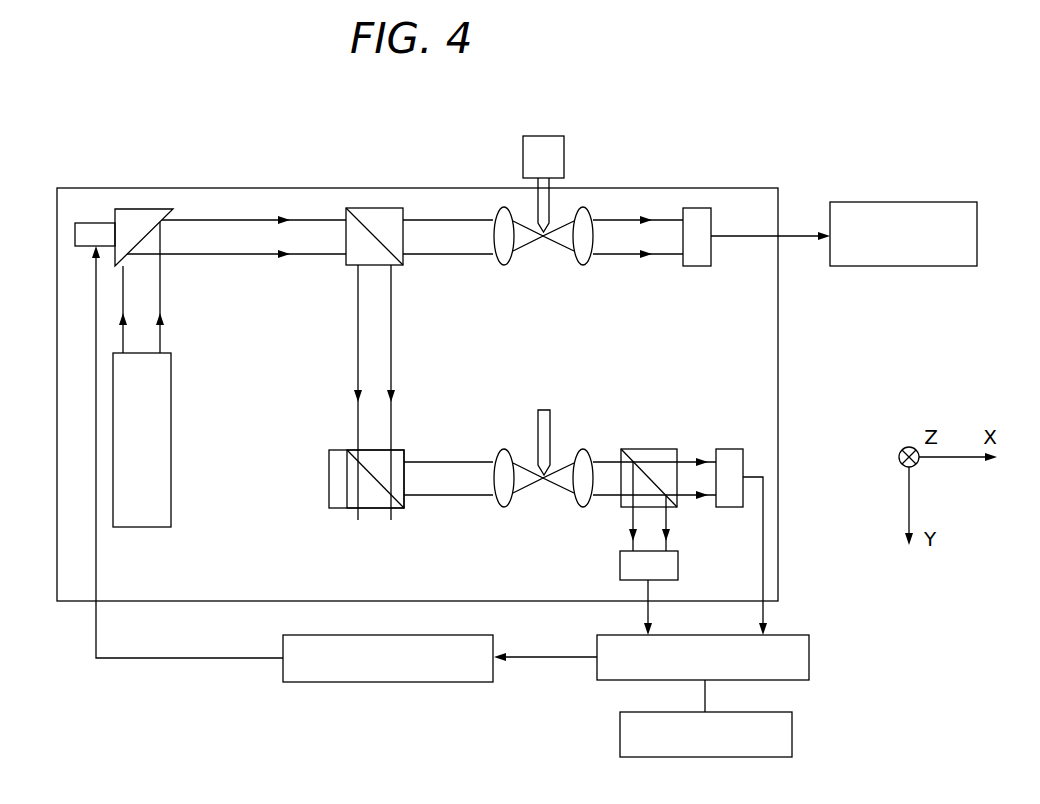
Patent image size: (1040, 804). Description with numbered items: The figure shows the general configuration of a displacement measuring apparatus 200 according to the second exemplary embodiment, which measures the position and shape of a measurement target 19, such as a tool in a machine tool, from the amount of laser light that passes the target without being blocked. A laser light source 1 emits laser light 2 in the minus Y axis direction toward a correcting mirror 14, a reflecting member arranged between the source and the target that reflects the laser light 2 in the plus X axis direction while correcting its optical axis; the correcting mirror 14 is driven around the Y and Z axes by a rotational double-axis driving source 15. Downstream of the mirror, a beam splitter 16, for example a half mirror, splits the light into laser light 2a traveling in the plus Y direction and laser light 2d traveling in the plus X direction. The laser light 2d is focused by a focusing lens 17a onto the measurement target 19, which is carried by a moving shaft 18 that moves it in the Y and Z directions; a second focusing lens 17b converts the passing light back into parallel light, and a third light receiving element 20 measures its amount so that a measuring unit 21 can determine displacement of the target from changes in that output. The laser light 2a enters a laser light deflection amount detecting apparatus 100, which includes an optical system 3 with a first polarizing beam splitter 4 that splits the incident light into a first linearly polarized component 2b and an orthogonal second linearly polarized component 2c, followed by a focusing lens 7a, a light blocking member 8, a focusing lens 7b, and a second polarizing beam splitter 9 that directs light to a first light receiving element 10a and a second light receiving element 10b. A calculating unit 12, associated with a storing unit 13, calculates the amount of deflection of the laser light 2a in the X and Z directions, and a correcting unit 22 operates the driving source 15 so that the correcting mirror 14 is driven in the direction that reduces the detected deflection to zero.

The laser light source 1 is at (171, 420).
The laser light 2 is at (160, 282).
The laser light 2a is at (358, 333).
The first linearly polarized component 2b is at (430, 497).
The second linearly polarized component 2c is at (475, 497).
The laser light 2d is at (437, 220).
The optical system 3 is at (314, 473).
The first polarizing beam splitter 4 is at (404, 450).
The focusing lens 7a is at (498, 451).
The focusing lens 7b is at (588, 450).
The light blocking member 8 is at (541, 410).
The second polarizing beam splitter 9 is at (647, 449).
The first light receiving element 10a is at (620, 565).
The second light receiving element 10b is at (730, 449).
The calculating unit 12 is at (809, 659).
The storing unit 13 is at (792, 733).
The correcting mirror 14 is at (141, 209).
The driving source 15 is at (92, 223).
The beam splitter 16 is at (370, 208).
The focusing lens 17a is at (498, 207).
The focusing lens 17b is at (592, 207).
The moving shaft 18 is at (560, 136).
The measurement target 19 is at (550, 205).
The third light receiving element 20 is at (694, 208).
The measuring unit 21 is at (898, 202).
The correcting unit 22 is at (415, 682).
The laser light deflection amount detecting apparatus 100 is at (752, 366).
The displacement measuring apparatus 200 is at (688, 100).